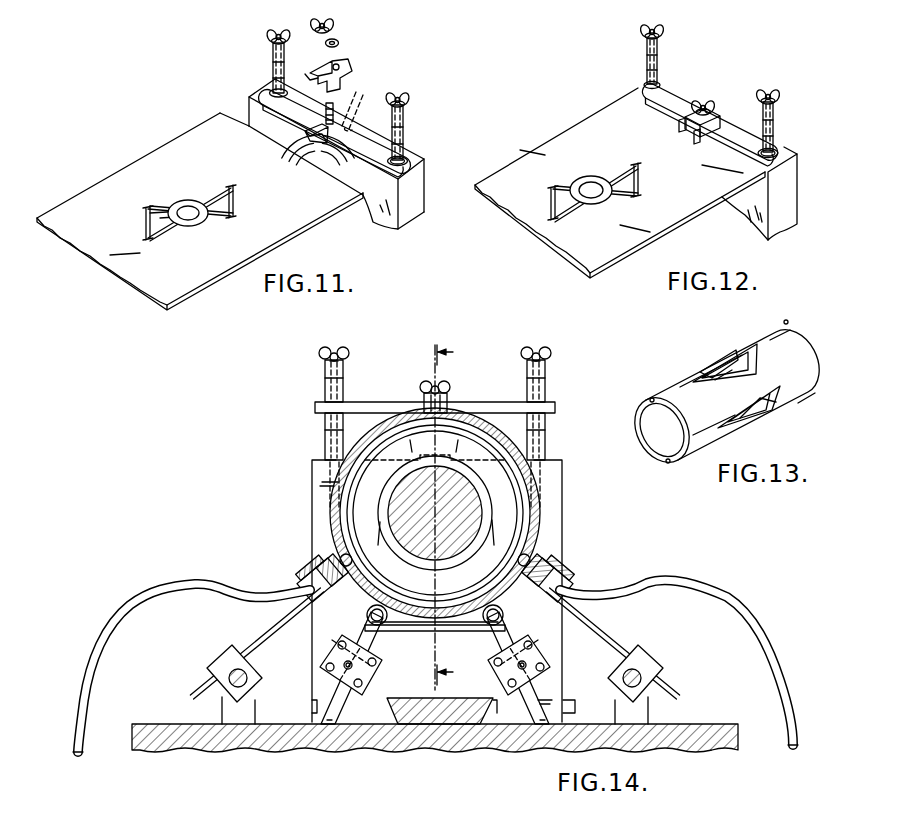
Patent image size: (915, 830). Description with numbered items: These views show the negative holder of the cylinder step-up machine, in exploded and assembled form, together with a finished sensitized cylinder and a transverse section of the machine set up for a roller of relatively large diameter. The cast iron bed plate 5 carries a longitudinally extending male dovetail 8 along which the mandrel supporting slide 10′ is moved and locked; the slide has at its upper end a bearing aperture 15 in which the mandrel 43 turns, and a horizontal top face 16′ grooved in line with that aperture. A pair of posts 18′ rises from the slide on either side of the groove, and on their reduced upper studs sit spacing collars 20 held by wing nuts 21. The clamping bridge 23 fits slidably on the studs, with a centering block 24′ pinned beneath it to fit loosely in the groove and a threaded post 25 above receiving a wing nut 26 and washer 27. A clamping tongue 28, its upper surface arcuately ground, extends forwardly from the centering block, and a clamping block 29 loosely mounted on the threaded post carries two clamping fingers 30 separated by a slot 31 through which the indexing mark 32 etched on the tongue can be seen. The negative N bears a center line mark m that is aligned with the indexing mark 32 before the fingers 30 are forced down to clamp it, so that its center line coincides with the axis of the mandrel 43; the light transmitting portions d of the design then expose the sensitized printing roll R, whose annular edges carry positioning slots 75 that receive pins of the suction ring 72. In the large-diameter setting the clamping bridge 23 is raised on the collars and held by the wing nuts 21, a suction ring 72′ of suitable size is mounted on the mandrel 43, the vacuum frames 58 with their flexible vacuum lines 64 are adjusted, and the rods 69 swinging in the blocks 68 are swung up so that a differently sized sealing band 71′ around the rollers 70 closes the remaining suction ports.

In FIG. 14, the bed plate 5 is at (322, 754).
In FIG. 14, the male dovetail 8 is at (426, 704).
In FIG. 11, the mandrel supporting slide 10′ is at (400, 202).
In FIG. 12, the mandrel supporting slide 10′ is at (799, 188).
In FIG. 14, the mandrel supporting slide 10′ is at (564, 489).
In FIG. 14, the bearing aperture 15 is at (459, 519).
In FIG. 11, the top face 16′ is at (410, 158).
In FIG. 12, the top face 16′ is at (787, 158).
In FIG. 11, the post 18′ is at (402, 96).
In FIG. 12, the post 18′ is at (768, 88).
In FIG. 11, the spacing collar 20 is at (258, 65).
In FIG. 12, the spacing collar 20 is at (677, 45).
In FIG. 14, the spacing collar 20 is at (435, 410).
In FIG. 11, the wing nut 21 is at (284, 30).
In FIG. 12, the wing nut 21 is at (664, 26).
In FIG. 14, the wing nut 21 is at (318, 352).
In FIG. 11, the clamping bridge 23 is at (360, 135).
In FIG. 12, the clamping bridge 23 is at (676, 90).
In FIG. 14, the clamping bridge 23 is at (494, 402).
In FIG. 11, the centering block 24′ is at (355, 85).
In FIG. 11, the threaded post 25 is at (335, 104).
In FIG. 11, the wing nut 26 is at (333, 26).
In FIG. 12, the wing nut 26 is at (705, 102).
In FIG. 14, the wing nut 26 is at (424, 385).
In FIG. 11, the washer 27 is at (339, 42).
In FIG. 11, the clamping tongue 28 is at (304, 132).
In FIG. 11, the clamping block 29 is at (346, 62).
In FIG. 12, the clamping block 29 is at (716, 108).
In FIG. 14, the clamping block 29 is at (449, 392).
In FIG. 11, the clamping finger 30 is at (305, 78).
In FIG. 12, the clamping finger 30 is at (679, 124).
In FIG. 12, the slot 31 is at (693, 136).
In FIG. 11, the indexing mark 32 is at (316, 148).
In FIG. 14, the mandrel 43 is at (470, 530).
In FIG. 14, the vacuum frame 58 is at (314, 562).
In FIG. 14, the flexible vacuum line 64 is at (108, 632).
In FIG. 14, the block 68 is at (335, 660).
In FIG. 14, the rod 69 is at (322, 688).
In FIG. 14, the roller 70 is at (367, 616).
In FIG. 14, the sealing band 71′ is at (400, 631).
In FIG. 11, the suction ring 72 is at (342, 165).
In FIG. 14, the suction ring 72′ is at (505, 487).
In FIG. 13, the positioning slot 75 is at (788, 320).
In FIG. 11, the negative N is at (218, 275).
In FIG. 12, the negative N is at (548, 140).
In FIG. 14, the negative N is at (533, 533).
In FIG. 13, the sensitized printing roll R is at (678, 372).
In FIG. 14, the sensitized printing roll R is at (535, 515).
In FIG. 11, the light transmitting portions d is at (186, 196).
In FIG. 12, the light transmitting portions d is at (618, 202).
In FIG. 11, the center line mark m is at (288, 158).
In FIG. 12, the center line mark m is at (698, 142).